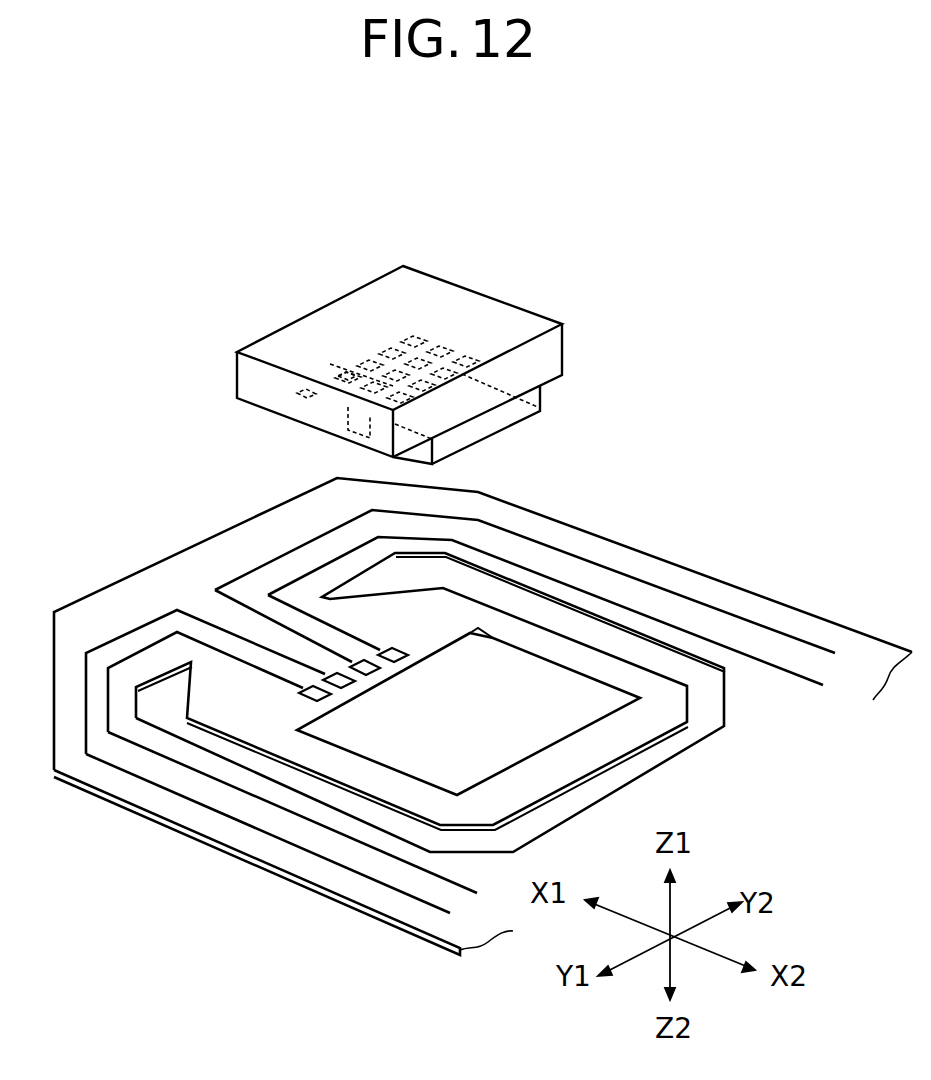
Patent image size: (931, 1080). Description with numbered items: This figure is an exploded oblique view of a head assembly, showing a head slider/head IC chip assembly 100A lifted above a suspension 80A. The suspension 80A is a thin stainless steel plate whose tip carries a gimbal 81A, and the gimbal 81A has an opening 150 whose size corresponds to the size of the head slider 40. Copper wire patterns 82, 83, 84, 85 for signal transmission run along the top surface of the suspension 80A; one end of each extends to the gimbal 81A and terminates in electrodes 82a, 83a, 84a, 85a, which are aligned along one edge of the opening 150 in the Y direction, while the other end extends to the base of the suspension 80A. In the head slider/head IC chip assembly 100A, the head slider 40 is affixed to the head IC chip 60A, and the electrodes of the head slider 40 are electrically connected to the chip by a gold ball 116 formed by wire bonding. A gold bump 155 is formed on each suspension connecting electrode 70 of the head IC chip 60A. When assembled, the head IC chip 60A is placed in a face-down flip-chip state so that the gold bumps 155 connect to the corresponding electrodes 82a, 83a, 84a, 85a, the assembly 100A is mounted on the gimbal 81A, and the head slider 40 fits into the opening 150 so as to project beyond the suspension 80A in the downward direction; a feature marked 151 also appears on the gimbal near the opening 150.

The head slider/head IC chip assembly 100A is at (530, 302).
The head IC chip 60A is at (378, 300).
The suspension connecting electrode 70 is at (345, 385).
The gold bump 155 is at (298, 397).
The gold ball 116 is at (345, 405).
The head slider 40 is at (520, 405).
The suspension 80A is at (733, 575).
The gimbal 81A is at (337, 790).
The wire pattern 82 is at (350, 903).
The wire pattern 83 is at (410, 917).
The wire pattern 84 is at (825, 652).
The wire pattern 85 is at (775, 665).
The electrode 82a is at (330, 700).
The electrode 83a is at (352, 686).
The electrode 84a is at (378, 668).
The electrode 85a is at (413, 632).
The opening 150 is at (580, 705).
The notch 151 is at (493, 637).